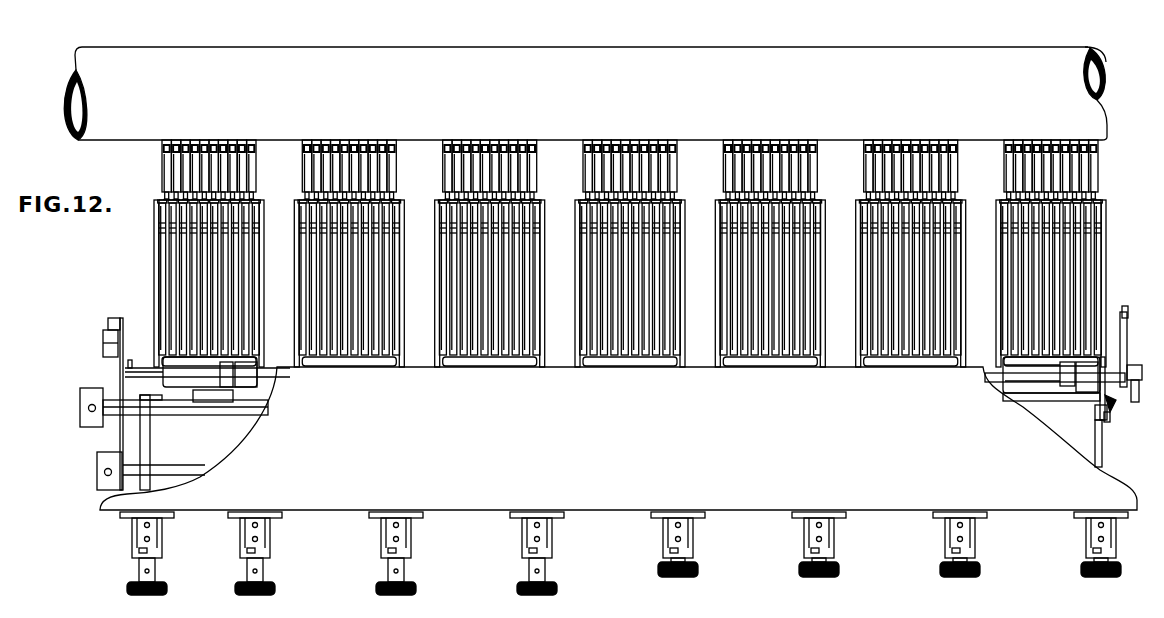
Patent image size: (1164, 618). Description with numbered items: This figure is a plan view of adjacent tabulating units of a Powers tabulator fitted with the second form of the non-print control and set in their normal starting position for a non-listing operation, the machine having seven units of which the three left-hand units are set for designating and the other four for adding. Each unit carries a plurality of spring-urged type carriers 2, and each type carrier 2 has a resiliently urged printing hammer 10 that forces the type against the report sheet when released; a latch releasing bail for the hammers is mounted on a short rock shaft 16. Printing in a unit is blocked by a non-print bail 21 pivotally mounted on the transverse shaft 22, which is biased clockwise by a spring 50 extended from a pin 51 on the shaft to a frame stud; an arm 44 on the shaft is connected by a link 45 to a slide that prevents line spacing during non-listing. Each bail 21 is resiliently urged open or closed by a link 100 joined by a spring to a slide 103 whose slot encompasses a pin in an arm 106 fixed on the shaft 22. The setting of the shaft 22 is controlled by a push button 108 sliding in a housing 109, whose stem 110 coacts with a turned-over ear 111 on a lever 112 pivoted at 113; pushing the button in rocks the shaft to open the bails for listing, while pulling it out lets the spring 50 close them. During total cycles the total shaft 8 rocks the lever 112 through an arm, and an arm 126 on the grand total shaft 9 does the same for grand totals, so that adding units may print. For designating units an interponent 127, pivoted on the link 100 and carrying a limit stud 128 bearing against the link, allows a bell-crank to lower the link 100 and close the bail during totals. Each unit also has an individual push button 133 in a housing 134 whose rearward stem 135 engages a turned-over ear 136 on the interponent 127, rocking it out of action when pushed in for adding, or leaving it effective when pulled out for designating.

The type carrier 2 is at (1087, 168).
The rock shaft 16 is at (1100, 223).
The printing hammer 10 is at (1062, 253).
The non-print bail 21 is at (1013, 362).
The transverse shaft 22 is at (142, 368).
The total shaft 8 is at (82, 398).
The grand total shaft 9 is at (97, 470).
The arm 44 is at (1126, 355).
The link 45 is at (1126, 308).
The spring 50 is at (1137, 366).
The pin 51 is at (1135, 402).
The link 100 is at (1110, 404).
The slide 103 is at (240, 389).
The arm 106 is at (228, 389).
The push button 108 is at (142, 596).
The housing 109 is at (134, 538).
The stem 110 is at (150, 422).
The turned-over ear 111 is at (136, 358).
The lever 112 is at (112, 318).
The pivot 113 is at (103, 343).
The arm 126 is at (120, 441).
The interponent 127 is at (1108, 420).
The limit stud 128 is at (1096, 458).
The push button 133 is at (1083, 576).
The housing 134 is at (1093, 535).
The stem 135 is at (1098, 418).
The turned-over ear 136 is at (1099, 402).